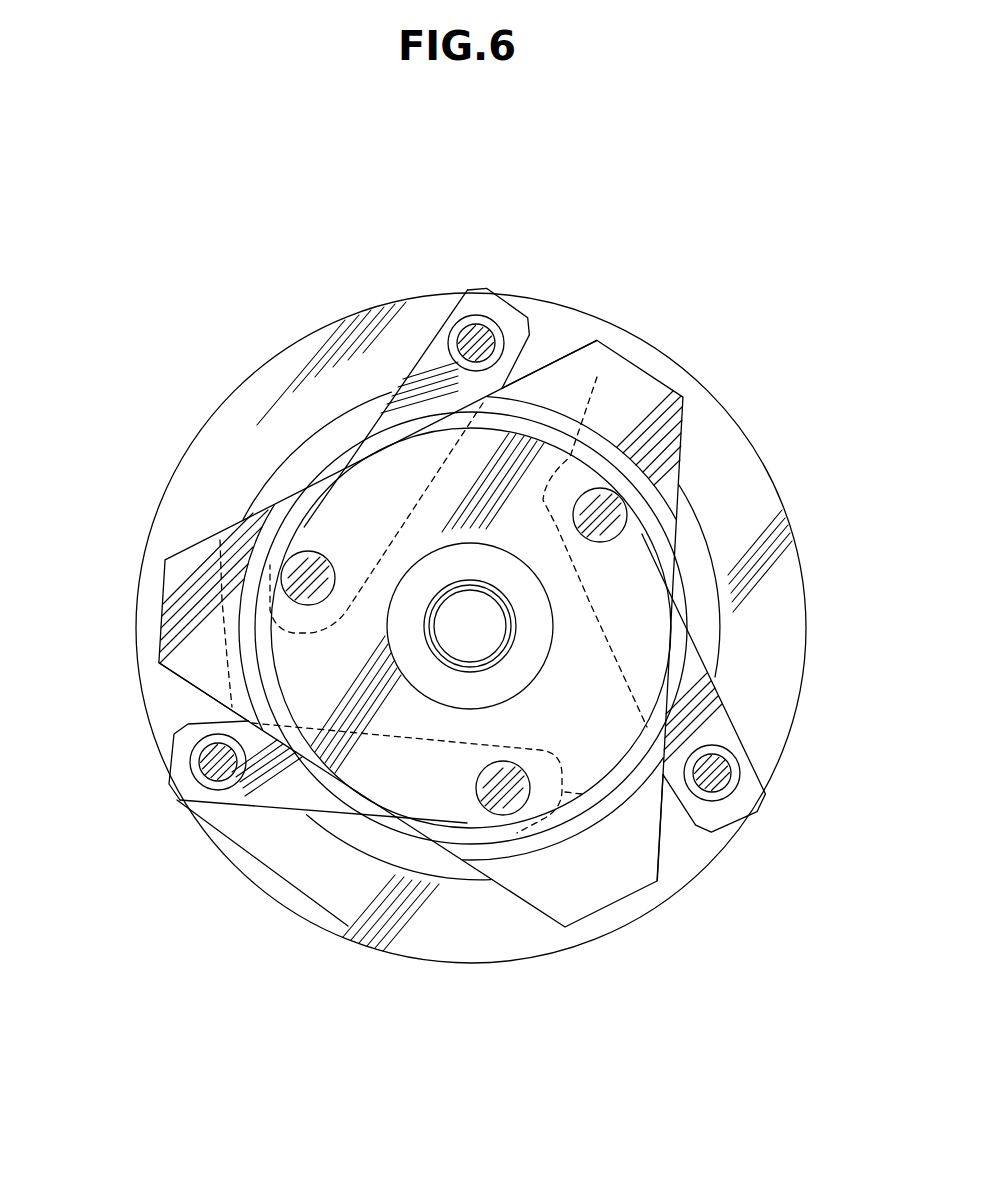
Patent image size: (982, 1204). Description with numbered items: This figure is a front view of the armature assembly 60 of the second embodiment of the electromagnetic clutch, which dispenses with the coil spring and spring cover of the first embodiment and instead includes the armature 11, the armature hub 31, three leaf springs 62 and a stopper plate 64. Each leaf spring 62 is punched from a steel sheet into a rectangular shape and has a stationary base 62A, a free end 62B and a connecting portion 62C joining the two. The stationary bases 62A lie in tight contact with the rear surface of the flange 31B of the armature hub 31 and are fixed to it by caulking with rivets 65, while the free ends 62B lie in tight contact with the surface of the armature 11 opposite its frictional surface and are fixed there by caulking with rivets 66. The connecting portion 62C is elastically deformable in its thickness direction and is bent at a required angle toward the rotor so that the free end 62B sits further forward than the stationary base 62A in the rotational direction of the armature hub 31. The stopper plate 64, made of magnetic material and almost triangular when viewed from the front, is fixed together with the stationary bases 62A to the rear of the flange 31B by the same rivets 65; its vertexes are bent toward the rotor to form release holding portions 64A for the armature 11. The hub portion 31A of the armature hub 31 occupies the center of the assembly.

The armature 11 is at (291, 338).
The armature assembly 60 is at (471, 202).
The leaf spring 62 is at (404, 358).
The stationary base 62A is at (572, 425).
The free end 62B is at (468, 298).
The connecting portion 62C is at (368, 450).
The stopper plate 64 is at (541, 366).
The release holding portion 64A is at (640, 383).
The rivet 65 is at (302, 566).
The rivet 66 is at (480, 330).
The armature hub 31 is at (551, 605).
The shaft portion 31A is at (633, 585).
The flange 31B is at (532, 607).